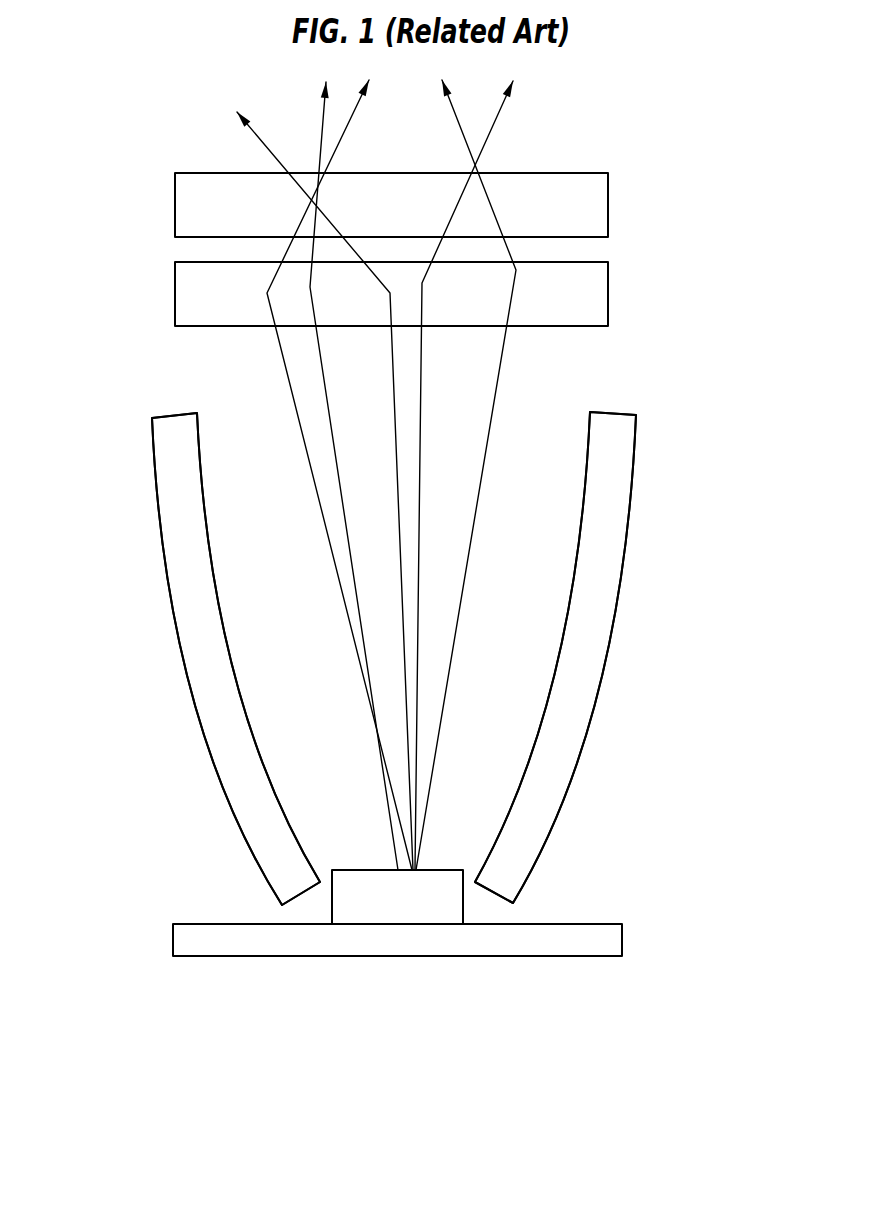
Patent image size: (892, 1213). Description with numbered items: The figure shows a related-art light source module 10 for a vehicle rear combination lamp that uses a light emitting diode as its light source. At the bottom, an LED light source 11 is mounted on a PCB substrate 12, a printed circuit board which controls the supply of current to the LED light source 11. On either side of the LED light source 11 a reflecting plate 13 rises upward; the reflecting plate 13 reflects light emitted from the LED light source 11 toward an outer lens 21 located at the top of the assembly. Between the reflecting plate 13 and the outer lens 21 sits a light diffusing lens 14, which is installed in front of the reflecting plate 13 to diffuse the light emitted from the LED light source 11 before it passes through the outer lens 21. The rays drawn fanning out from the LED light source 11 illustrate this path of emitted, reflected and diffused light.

The light source module 10 is at (672, 517).
The LED light source 11 is at (418, 907).
The PCB substrate 12 is at (317, 942).
The reflecting plate 13 is at (203, 678).
The light diffusing lens 14 is at (599, 290).
The outer lens 21 is at (599, 207).